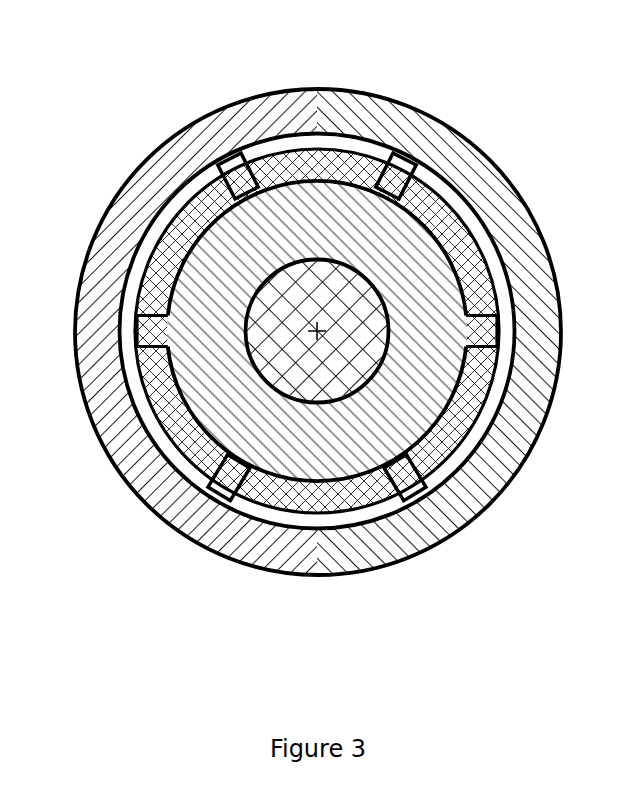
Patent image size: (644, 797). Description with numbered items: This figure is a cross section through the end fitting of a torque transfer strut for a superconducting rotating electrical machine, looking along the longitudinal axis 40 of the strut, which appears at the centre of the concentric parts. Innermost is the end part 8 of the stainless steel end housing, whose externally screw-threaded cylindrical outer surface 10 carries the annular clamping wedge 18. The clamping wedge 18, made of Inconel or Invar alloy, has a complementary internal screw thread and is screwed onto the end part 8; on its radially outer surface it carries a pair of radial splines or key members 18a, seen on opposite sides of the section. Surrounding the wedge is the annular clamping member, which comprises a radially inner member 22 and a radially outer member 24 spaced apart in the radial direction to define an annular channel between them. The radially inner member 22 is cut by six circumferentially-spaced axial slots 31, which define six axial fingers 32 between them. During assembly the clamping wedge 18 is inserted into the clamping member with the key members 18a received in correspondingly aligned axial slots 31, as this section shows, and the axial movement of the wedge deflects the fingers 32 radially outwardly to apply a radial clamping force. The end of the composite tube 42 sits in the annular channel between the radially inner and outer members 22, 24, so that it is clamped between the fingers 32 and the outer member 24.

The end part 8 is at (333, 308).
The externally screw-threaded cylindrical outer surface 10 is at (390, 350).
The annular clamping wedge 18 is at (428, 488).
The radial splines or key members 18a is at (157, 330).
The radially inner member 22 is at (430, 413).
The radially outer member 24 is at (173, 493).
The axial slots 31 is at (233, 183).
The axial fingers 32 is at (150, 156).
The longitudinal axis 40 is at (307, 328).
The composite tube 42 is at (318, 523).